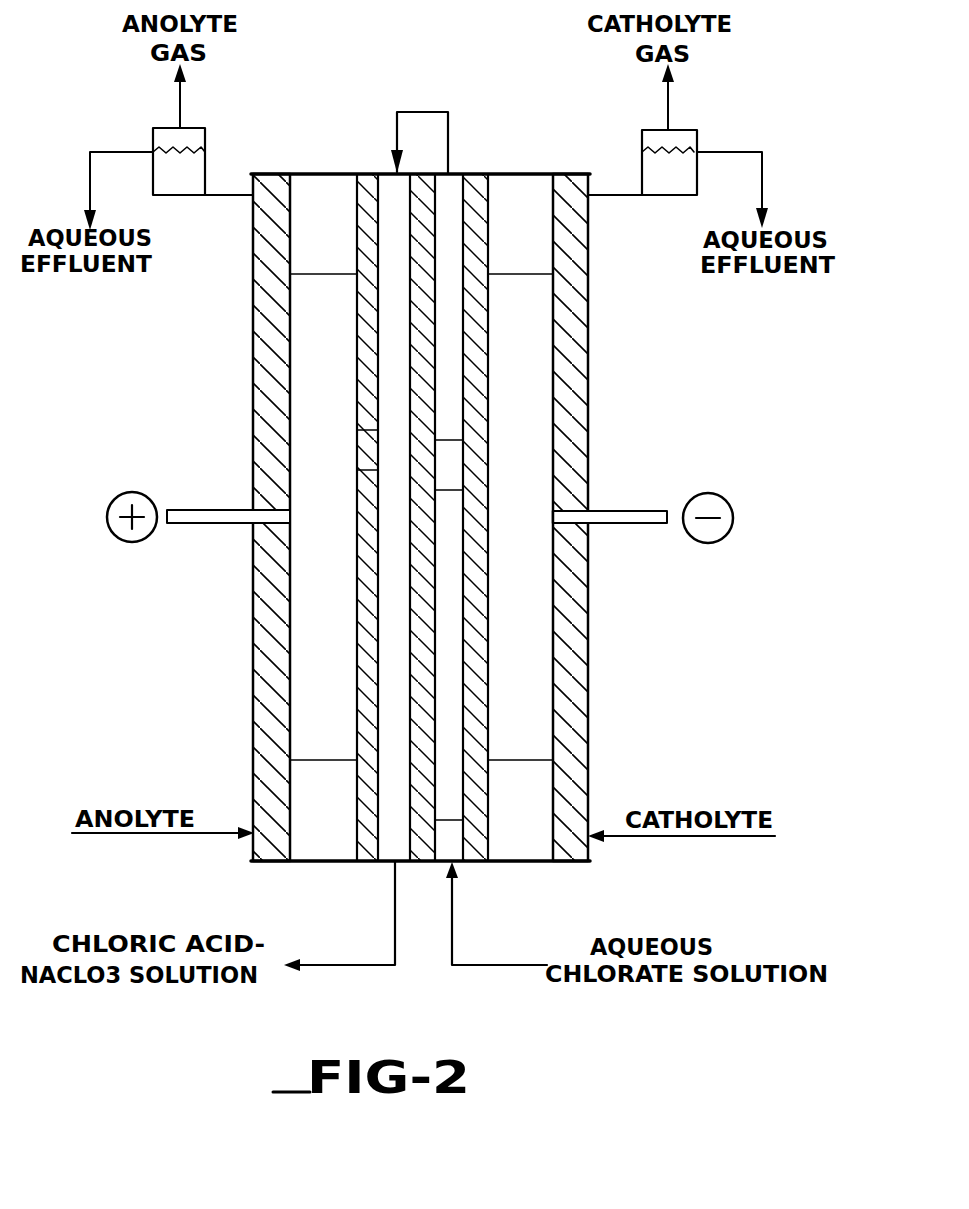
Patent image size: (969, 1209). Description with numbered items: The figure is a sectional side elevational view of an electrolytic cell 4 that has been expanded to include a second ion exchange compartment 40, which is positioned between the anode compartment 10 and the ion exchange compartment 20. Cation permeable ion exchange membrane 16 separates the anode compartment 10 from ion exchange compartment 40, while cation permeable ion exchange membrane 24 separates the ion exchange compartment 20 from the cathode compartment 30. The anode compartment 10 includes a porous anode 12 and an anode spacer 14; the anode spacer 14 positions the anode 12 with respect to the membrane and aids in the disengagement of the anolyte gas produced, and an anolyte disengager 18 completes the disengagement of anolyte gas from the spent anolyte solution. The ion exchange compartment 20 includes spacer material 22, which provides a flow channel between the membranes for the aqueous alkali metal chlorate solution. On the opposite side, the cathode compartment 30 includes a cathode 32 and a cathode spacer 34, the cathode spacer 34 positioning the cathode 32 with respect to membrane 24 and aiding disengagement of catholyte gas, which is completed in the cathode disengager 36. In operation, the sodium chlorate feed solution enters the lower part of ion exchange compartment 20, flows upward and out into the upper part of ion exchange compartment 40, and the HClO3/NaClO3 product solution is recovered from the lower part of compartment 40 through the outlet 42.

The electrolytic cell 4 is at (252, 683).
The anode compartment 10 is at (306, 170).
The anode 12 is at (320, 843).
The anode spacer 14 is at (253, 333).
The cation permeable ion exchange membrane 16 is at (368, 180).
The anolyte disengager 18 is at (178, 196).
The ion exchange compartment 20 is at (452, 486).
The spacer material 22 is at (453, 186).
The cation permeable ion exchange membrane 24 is at (472, 847).
The cathode compartment 30 is at (530, 866).
The cathode 32 is at (530, 183).
The cathode spacer 34 is at (584, 667).
The cathode disengager 36 is at (665, 196).
The second ion exchange compartment 40 is at (390, 450).
The central compartment outlet 42 is at (423, 861).